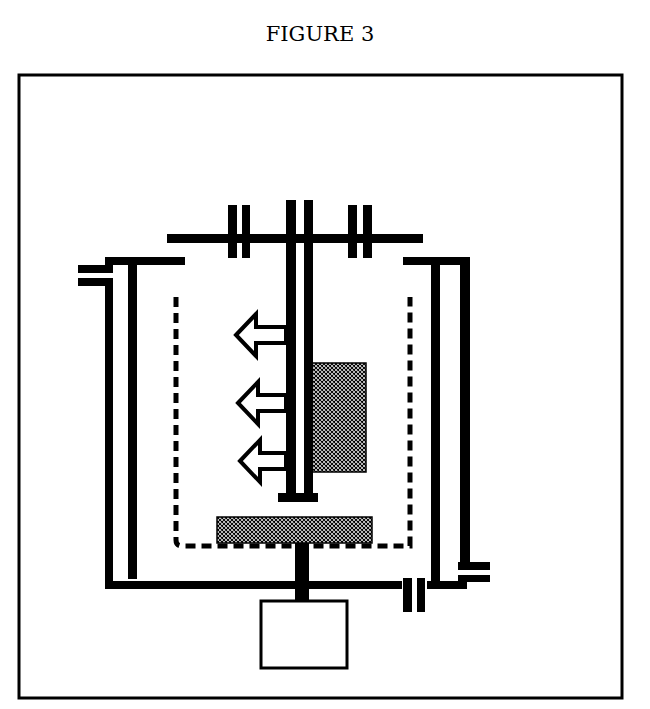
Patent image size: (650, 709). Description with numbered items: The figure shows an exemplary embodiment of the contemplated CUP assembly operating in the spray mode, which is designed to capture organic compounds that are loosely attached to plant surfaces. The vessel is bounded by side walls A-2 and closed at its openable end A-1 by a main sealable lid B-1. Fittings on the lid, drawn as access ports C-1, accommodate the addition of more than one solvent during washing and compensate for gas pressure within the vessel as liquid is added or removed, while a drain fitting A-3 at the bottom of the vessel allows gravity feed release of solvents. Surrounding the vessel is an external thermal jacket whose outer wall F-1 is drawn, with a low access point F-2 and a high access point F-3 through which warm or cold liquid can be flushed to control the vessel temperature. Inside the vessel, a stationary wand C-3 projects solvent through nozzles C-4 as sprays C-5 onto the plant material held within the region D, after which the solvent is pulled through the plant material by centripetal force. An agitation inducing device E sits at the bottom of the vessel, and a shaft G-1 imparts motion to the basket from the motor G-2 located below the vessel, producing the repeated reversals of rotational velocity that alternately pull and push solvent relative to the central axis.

The openable end A-1 is at (146, 256).
The side walls A-2 is at (443, 288).
The drain fitting A-3 is at (427, 602).
The main sealable lid B-1 is at (411, 232).
The access port C-1 is at (233, 204).
The central gas inlet tube C-3 is at (305, 199).
The electrode block C-4 is at (352, 398).
The gas flow arrows C-5 is at (244, 460).
The plasma region boundary D is at (406, 328).
The agitation inducing device E is at (237, 517).
The outer wall of thermal jacket F-1 is at (471, 290).
The low access point F-2 is at (488, 562).
The high access point F-3 is at (88, 265).
The shaft G-1 is at (292, 564).
The motor G-2 is at (348, 643).